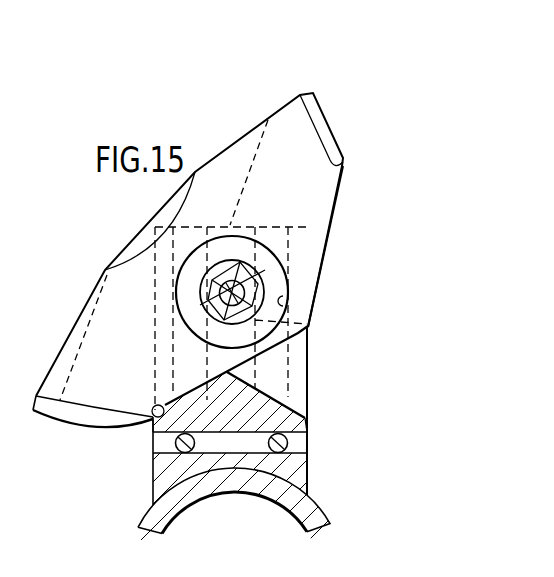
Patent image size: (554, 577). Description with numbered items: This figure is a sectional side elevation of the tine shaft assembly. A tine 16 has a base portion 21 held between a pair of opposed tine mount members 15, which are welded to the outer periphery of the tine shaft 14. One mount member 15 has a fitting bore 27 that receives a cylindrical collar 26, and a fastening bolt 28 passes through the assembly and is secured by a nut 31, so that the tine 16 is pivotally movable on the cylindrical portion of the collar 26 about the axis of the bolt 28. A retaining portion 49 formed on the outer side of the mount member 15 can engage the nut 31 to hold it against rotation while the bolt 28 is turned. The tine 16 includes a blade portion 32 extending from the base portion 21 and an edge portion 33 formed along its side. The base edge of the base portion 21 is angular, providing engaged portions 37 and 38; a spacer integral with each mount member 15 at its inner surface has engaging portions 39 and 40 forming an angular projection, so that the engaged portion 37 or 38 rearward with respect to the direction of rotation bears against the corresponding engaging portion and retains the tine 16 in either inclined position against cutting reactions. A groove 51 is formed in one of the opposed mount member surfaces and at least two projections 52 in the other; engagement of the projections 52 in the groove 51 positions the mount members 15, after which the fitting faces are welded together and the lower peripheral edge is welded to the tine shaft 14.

The tine shaft 14 is at (307, 517).
The tine mount members 15 is at (310, 353).
The tine 16 is at (52, 422).
The base portion 21 is at (120, 400).
The cylindrical collar 26 is at (202, 283).
The fitting bore 27 is at (284, 300).
The fastening bolt 28 is at (223, 297).
The nut 31 is at (303, 334).
The blade portion 32 is at (77, 426).
The edge portion 33 is at (345, 152).
The engaged portion 37 is at (178, 400).
The engaged portion 38 is at (331, 228).
The engaging portion 39 is at (153, 418).
The engaging portion 40 is at (278, 397).
The retaining portion 49 is at (240, 238).
The groove 51 is at (298, 446).
The projections 52 is at (190, 453).